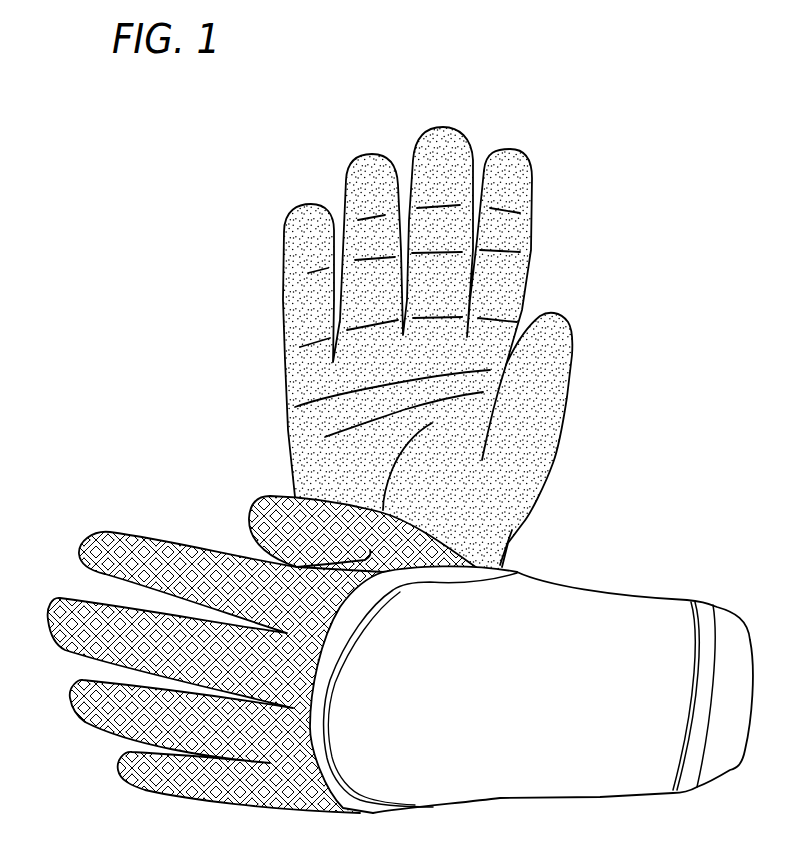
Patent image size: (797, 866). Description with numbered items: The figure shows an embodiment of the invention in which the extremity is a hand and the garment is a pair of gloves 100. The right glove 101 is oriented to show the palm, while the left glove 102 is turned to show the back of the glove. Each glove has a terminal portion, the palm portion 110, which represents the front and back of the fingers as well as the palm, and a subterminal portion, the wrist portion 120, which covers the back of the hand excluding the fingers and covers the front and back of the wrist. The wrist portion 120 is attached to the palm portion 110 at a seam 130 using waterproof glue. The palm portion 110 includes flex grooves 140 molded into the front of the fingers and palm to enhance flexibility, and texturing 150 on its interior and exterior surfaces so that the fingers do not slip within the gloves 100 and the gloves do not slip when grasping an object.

The pair of gloves 100 is at (396, 470).
The right glove 101 is at (434, 350).
The left glove 102 is at (115, 555).
The palm portion 110 is at (422, 440).
The wrist portion 120 is at (531, 682).
The seam 130 is at (445, 587).
The flex grooves 140 is at (315, 272).
The texturing 150 is at (514, 459).